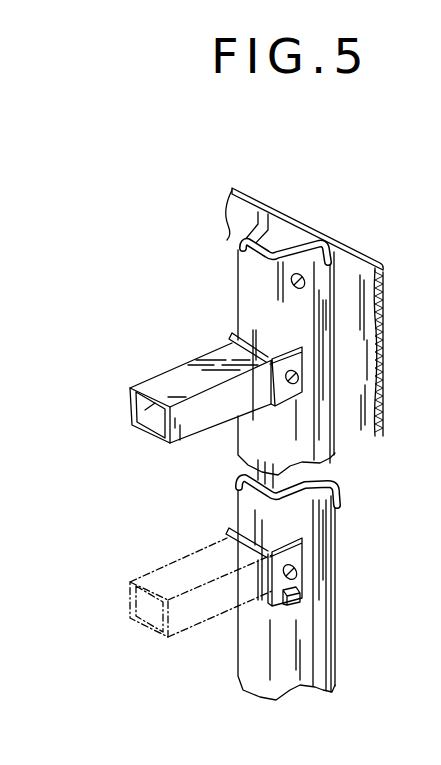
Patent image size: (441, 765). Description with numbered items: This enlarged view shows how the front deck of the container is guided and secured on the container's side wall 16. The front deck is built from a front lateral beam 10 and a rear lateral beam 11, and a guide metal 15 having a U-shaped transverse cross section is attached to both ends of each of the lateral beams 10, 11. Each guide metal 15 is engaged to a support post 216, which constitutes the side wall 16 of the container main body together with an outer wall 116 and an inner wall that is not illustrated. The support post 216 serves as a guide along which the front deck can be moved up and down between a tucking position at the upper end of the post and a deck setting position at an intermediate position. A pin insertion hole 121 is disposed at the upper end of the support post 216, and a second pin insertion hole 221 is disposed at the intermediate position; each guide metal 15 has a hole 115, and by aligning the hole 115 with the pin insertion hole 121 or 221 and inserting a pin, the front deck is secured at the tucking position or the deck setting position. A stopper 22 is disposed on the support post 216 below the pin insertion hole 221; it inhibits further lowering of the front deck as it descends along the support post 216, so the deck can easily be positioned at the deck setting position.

The front lateral beam 10 is at (169, 484).
The rear lateral beam 11 is at (154, 378).
The guide metal 15 is at (232, 334).
The side wall 16 is at (279, 204).
The stopper 22 is at (300, 601).
The hole 115 is at (300, 378).
The outer wall 116 is at (364, 268).
The pin insertion hole 121 is at (305, 276).
The support post 216 is at (248, 292).
The pin insertion hole 221 is at (299, 573).